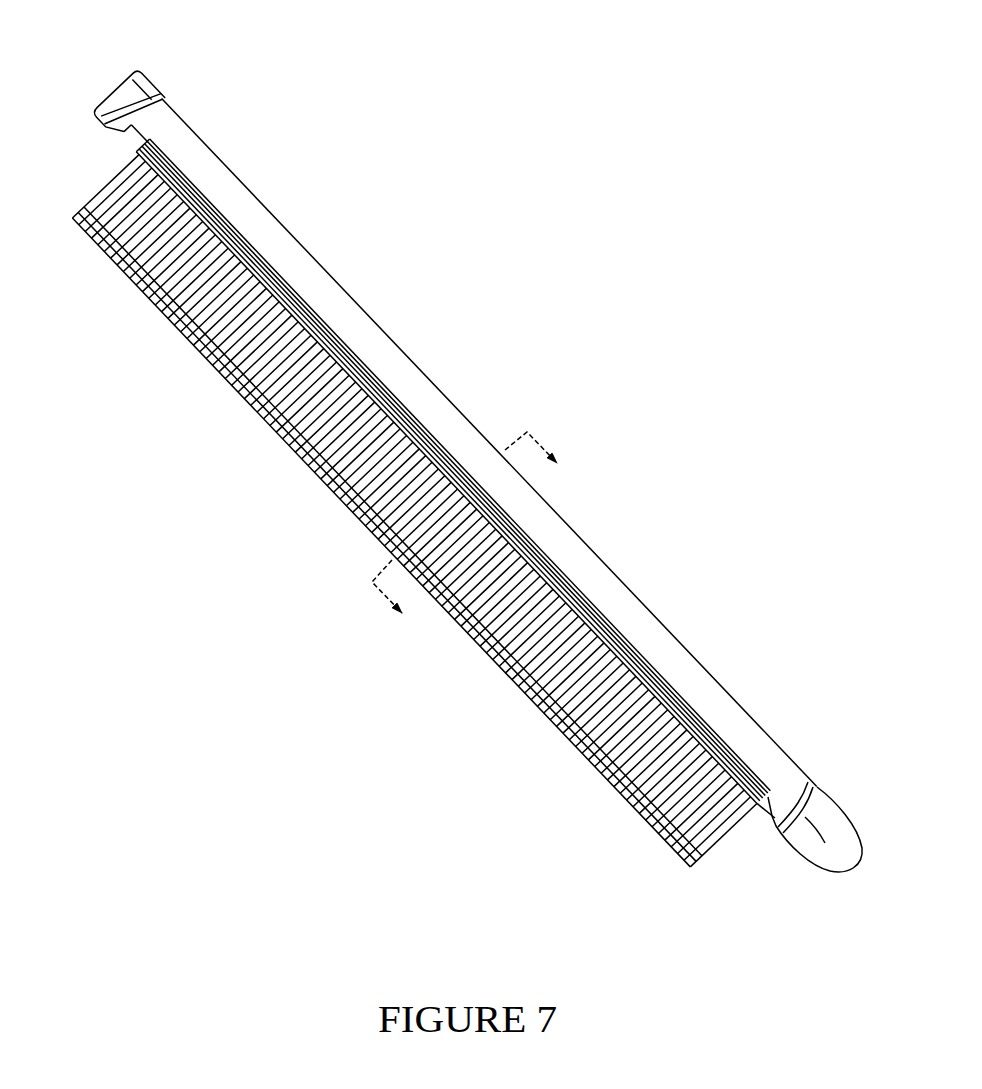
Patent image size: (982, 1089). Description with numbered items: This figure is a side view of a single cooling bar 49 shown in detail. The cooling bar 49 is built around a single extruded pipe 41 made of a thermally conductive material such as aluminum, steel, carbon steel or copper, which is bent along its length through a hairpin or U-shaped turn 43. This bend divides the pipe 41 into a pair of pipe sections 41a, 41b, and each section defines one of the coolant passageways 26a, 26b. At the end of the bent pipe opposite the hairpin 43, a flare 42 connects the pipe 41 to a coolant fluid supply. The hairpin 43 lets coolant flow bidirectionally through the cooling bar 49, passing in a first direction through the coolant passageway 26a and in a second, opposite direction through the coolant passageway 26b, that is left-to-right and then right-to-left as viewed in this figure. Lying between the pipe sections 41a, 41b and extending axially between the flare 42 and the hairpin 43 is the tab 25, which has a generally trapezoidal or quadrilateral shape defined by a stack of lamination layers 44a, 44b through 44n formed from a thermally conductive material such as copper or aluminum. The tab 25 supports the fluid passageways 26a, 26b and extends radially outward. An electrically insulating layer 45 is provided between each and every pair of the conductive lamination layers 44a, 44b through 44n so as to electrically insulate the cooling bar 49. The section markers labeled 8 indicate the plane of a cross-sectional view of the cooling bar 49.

The section line 8 is at (473, 532).
The tab 25 is at (414, 511).
The fluid passageway 26a is at (386, 537).
The fluid passageway 26b is at (141, 89).
The pipe 41 is at (489, 443).
The pipe section 41a is at (461, 479).
The pipe section 41b is at (136, 137).
The flare 42 is at (128, 105).
The hairpin 43 is at (838, 822).
The lamination layer 44a is at (105, 186).
The lamination layer 44b is at (112, 192).
The lamination layer 44n is at (723, 834).
The electrically insulating layer 45 is at (142, 145).
The cooling bar 49 is at (643, 525).